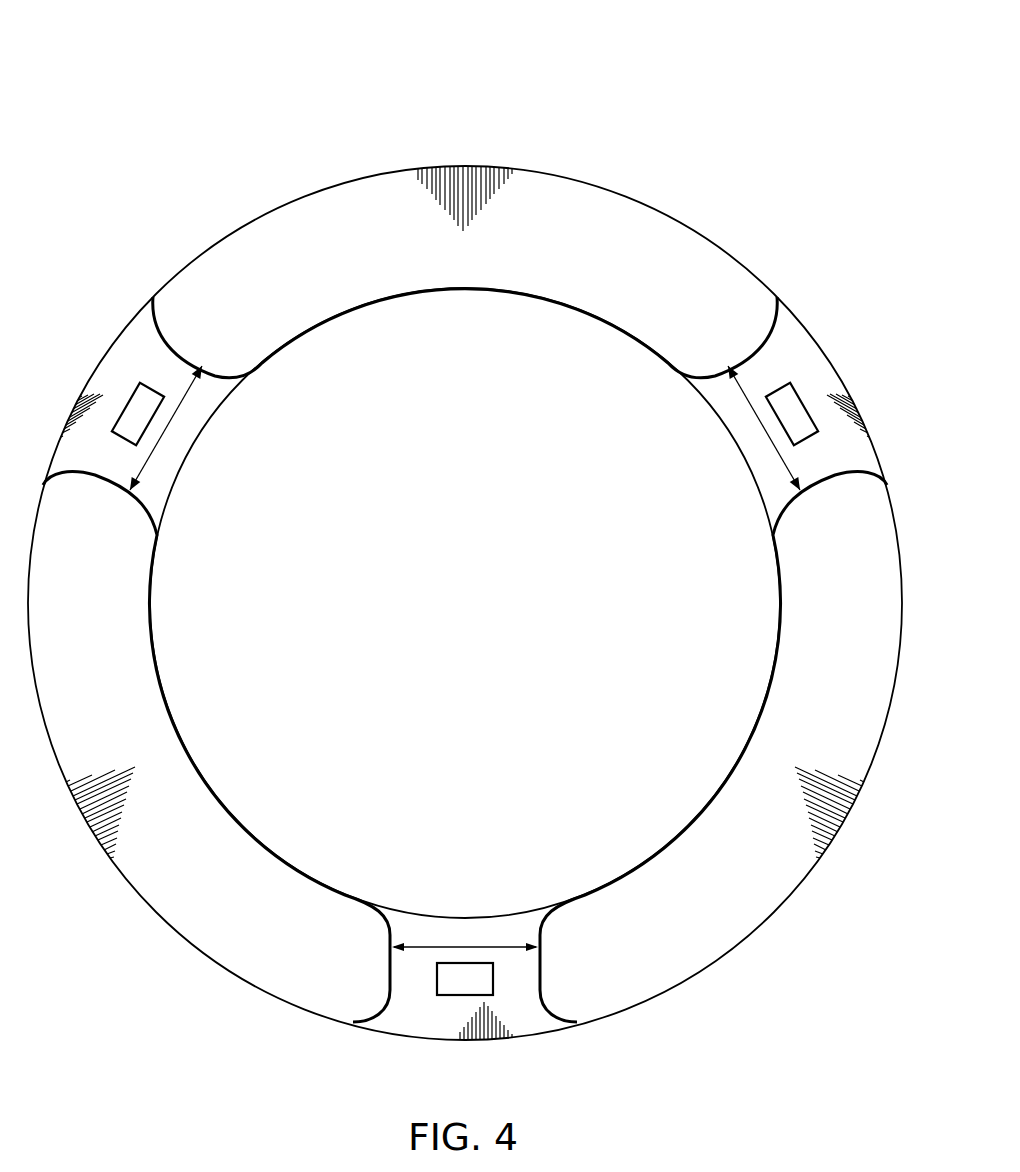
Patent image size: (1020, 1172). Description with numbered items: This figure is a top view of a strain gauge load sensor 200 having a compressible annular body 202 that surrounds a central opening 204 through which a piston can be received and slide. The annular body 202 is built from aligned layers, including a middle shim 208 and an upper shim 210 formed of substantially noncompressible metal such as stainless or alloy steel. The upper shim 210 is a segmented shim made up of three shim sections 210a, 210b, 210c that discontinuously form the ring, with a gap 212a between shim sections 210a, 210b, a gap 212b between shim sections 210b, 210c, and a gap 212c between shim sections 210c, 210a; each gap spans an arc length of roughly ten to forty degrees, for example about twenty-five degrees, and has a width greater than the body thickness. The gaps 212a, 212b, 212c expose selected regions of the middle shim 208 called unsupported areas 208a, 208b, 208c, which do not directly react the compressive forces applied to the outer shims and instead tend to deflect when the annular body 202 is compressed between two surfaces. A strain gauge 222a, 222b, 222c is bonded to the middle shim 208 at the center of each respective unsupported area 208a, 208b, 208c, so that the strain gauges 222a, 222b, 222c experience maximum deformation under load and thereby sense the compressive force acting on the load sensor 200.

The strain gauge load sensor 200 is at (463, 550).
The compressible annular body 202 is at (598, 197).
The central opening 204 is at (463, 290).
The middle shim 208 is at (463, 692).
The unsupported area 208a is at (788, 393).
The unsupported area 208b is at (473, 976).
The unsupported area 208c is at (140, 393).
The upper shim 210 is at (465, 569).
The shim section 210a is at (397, 197).
The shim section 210b is at (773, 885).
The shim section 210c is at (153, 880).
The gap 212a is at (755, 435).
The gap 212b is at (463, 943).
The gap 212c is at (170, 432).
The strain gauge 222a is at (793, 420).
The strain gauge 222b is at (455, 985).
The strain gauge 222c is at (133, 420).